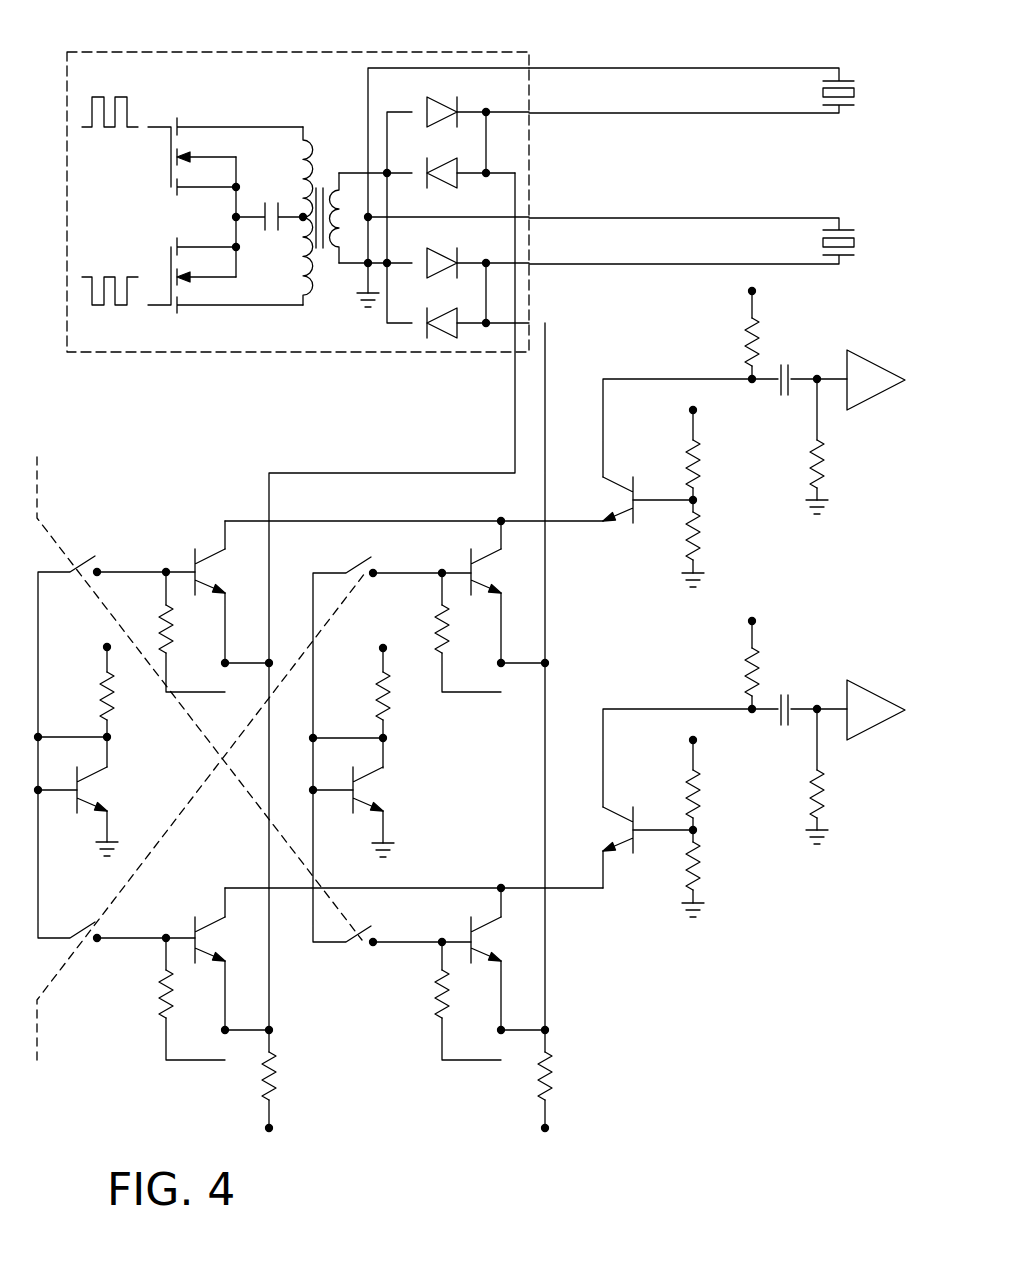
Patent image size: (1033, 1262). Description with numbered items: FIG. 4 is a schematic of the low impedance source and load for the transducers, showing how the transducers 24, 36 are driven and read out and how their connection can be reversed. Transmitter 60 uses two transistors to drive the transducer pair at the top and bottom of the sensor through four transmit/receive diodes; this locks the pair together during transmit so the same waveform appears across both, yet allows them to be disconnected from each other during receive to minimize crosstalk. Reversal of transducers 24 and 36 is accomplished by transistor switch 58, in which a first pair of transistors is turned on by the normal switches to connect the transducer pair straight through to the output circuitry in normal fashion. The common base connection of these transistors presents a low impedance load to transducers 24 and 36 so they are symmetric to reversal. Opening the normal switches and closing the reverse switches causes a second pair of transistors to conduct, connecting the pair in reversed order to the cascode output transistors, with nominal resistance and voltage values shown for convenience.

The transmitter 60 is at (228, 51).
The transducer 24 is at (849, 80).
The transducer 36 is at (849, 230).
The transistor switch 58 is at (636, 1031).